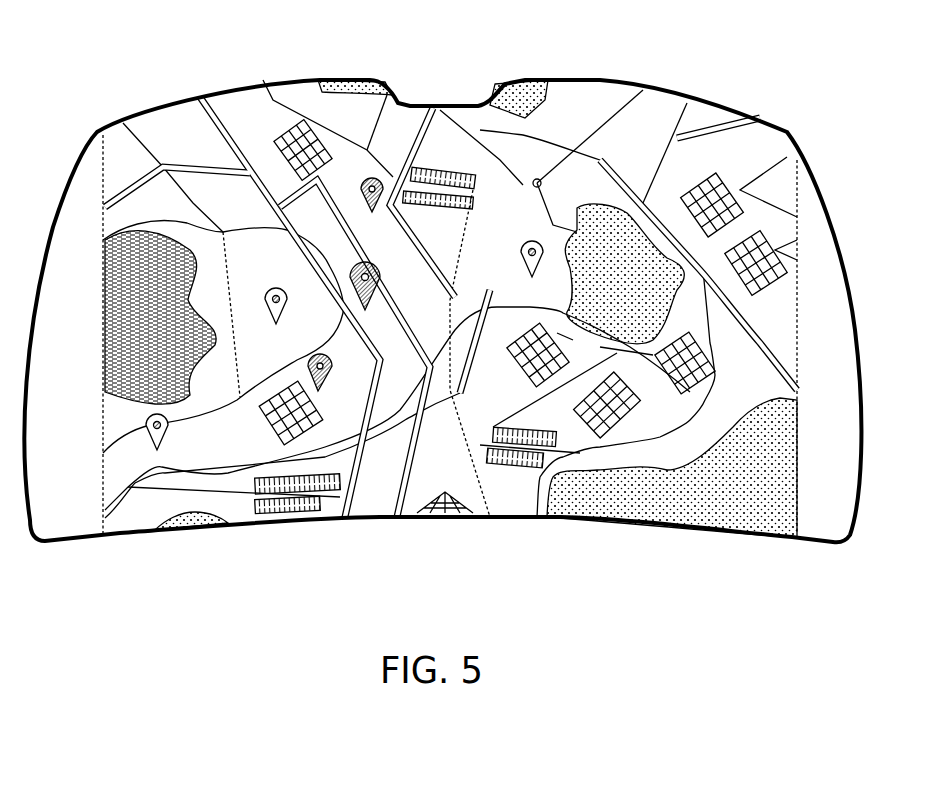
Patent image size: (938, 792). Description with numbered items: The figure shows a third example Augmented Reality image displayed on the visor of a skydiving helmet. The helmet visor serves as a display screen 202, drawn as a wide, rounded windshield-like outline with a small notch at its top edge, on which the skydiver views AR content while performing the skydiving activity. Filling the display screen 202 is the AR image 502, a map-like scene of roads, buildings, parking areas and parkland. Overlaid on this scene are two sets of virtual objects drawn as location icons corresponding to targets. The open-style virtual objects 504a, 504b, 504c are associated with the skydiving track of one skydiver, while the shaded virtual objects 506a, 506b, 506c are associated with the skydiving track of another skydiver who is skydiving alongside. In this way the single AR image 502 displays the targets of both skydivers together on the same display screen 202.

The display screen 202 is at (617, 78).
The AR image 502 is at (130, 515).
The virtual object 504a is at (532, 241).
The virtual object 504b is at (287, 288).
The virtual object 504c is at (146, 425).
The virtual object 506a is at (374, 179).
The virtual object 506b is at (370, 309).
The virtual object 506c is at (318, 390).